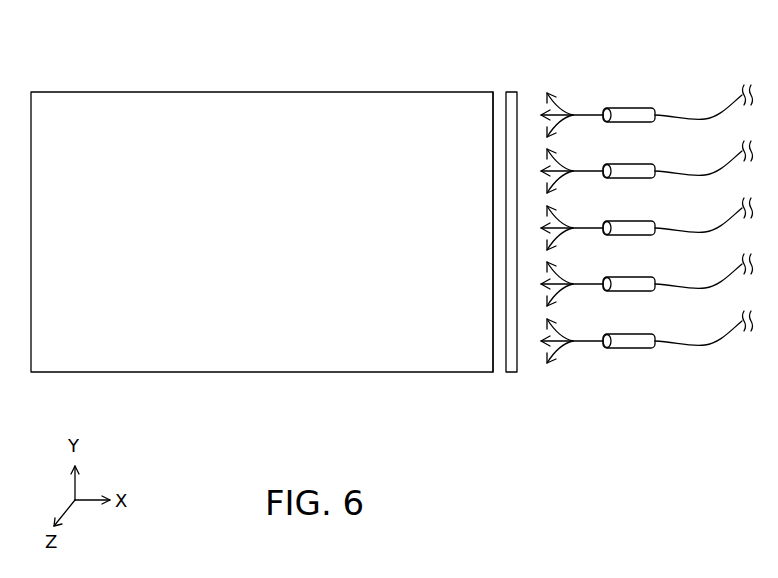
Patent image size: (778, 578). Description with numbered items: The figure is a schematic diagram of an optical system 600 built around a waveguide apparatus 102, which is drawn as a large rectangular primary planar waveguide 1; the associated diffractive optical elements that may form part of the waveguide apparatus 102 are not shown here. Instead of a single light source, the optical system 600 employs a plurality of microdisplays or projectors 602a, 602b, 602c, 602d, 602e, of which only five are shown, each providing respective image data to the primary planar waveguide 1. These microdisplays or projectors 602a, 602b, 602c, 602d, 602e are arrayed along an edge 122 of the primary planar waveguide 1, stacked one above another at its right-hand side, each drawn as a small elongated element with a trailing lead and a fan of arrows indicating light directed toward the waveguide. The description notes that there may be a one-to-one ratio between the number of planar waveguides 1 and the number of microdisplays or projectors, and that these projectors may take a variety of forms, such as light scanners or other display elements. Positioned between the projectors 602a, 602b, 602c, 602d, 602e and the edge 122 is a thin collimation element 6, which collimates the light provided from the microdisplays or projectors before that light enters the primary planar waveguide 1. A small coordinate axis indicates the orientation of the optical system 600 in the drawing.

The waveguide apparatus 102 is at (103, 56).
The primary planar waveguide 1 is at (272, 92).
The edge of the primary planar waveguide 122 is at (490, 115).
The collimation element 6 is at (513, 92).
The optical system 600 is at (543, 421).
The microdisplay or projector 602a is at (590, 114).
The microdisplay or projector 602b is at (590, 170).
The microdisplay or projector 602c is at (590, 227).
The microdisplay or projector 602d is at (590, 283).
The microdisplay or projector 602e is at (590, 340).